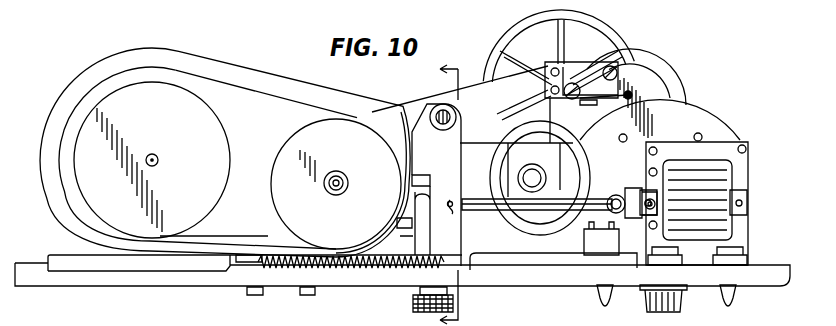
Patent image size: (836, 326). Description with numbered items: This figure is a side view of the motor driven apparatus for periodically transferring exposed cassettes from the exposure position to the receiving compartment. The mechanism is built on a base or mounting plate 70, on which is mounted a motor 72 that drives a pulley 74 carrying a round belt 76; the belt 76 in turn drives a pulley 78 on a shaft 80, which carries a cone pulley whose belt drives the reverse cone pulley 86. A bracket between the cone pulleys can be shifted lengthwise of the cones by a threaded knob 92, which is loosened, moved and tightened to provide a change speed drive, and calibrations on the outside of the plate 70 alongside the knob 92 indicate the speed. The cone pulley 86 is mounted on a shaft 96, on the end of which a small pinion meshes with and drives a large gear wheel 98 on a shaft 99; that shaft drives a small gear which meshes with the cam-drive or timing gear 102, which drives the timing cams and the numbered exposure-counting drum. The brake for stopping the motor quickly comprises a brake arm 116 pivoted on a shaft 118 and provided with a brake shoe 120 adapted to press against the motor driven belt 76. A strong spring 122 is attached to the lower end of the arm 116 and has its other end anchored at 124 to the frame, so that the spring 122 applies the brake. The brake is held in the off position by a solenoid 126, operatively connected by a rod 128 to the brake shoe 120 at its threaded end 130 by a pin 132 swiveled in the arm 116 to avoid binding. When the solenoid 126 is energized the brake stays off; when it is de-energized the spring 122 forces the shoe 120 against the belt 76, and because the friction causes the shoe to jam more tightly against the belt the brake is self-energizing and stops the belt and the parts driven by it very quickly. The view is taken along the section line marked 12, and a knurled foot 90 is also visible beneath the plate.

The base or mounting plate 70 is at (170, 275).
The spring anchor 124 is at (248, 268).
The spring 122 is at (353, 270).
The knob 92 is at (453, 302).
The shaft 99 is at (580, 305).
The knurled foot 90 is at (664, 305).
The pulley 74 is at (215, 172).
The motor 72 is at (118, 61).
The round belt 76 is at (288, 100).
The pulley 78 is at (298, 146).
The shaft 80 is at (332, 190).
The brake arm 116 is at (457, 131).
The shaft 118 is at (458, 112).
The brake shoe 120 is at (413, 173).
The section line 12 is at (463, 194).
The threaded end 130 is at (468, 200).
The pin 132 is at (456, 198).
The rod 128 is at (594, 205).
The reverse cone pulley 86 is at (530, 129).
The shaft 96 is at (532, 174).
The large gear wheel 98 is at (613, 33).
The cam-drive or timing gear 102 is at (677, 88).
The solenoid 126 is at (717, 180).